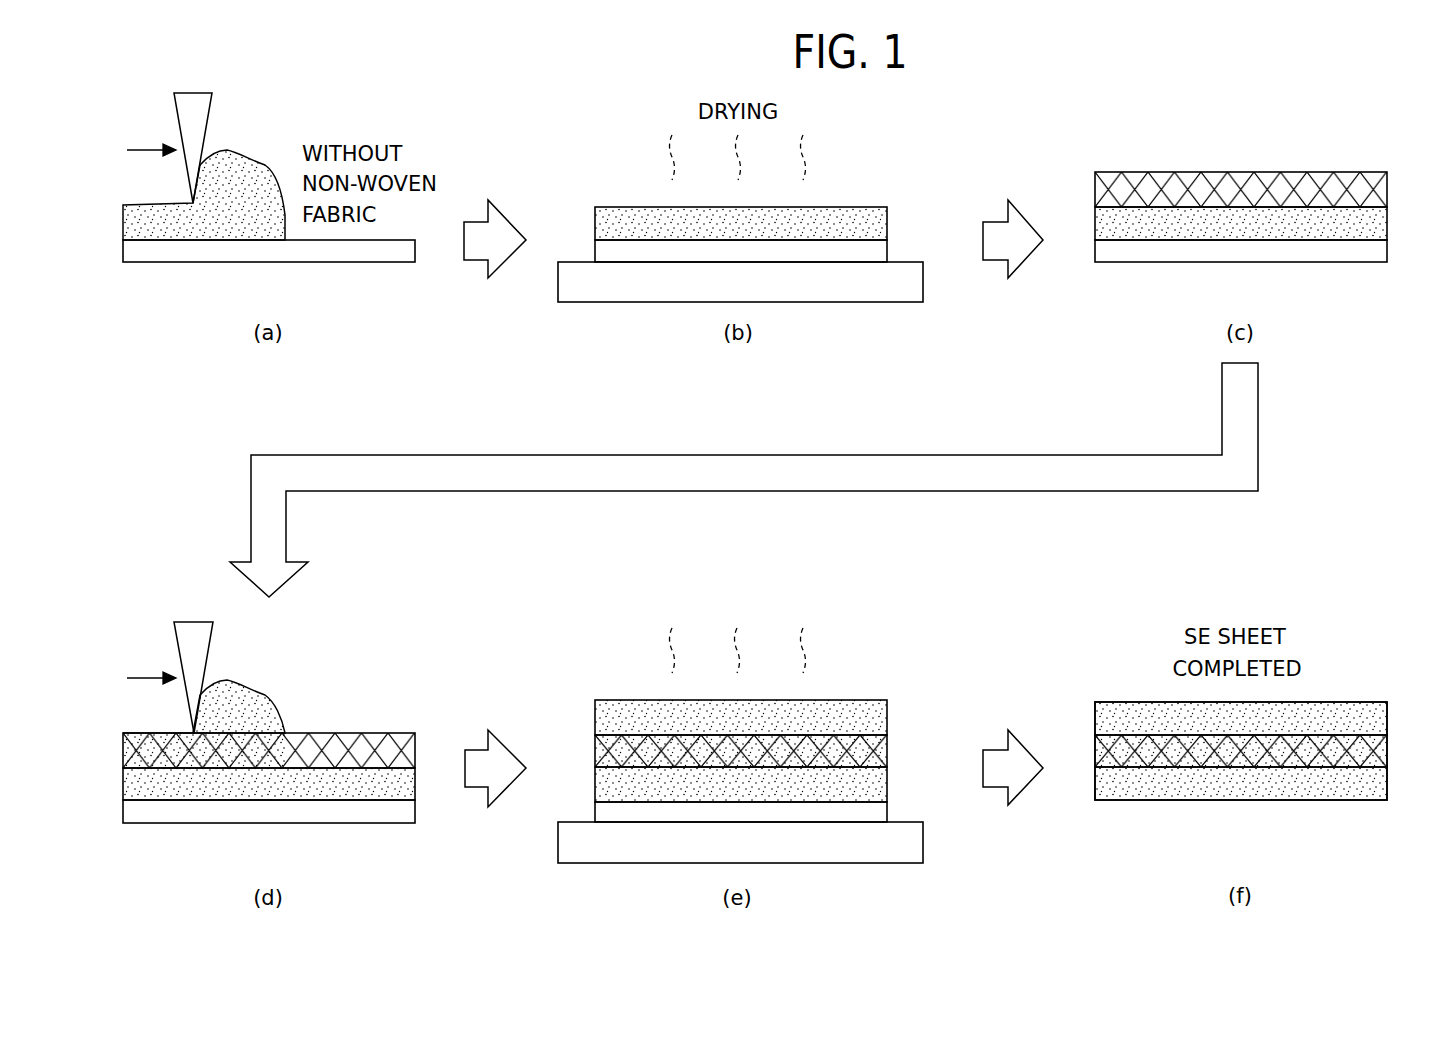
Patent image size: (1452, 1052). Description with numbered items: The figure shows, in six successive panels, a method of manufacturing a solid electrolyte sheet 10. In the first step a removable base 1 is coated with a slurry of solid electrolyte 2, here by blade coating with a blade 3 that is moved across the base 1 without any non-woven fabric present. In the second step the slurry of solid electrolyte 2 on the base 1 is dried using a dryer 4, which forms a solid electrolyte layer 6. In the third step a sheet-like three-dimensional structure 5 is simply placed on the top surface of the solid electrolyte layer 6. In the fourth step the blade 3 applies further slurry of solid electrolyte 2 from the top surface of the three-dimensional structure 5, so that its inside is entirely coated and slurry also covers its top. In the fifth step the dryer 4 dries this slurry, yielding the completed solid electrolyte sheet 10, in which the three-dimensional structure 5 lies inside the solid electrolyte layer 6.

The base 1 is at (368, 262).
The slurry of solid electrolyte 2 is at (255, 163).
The blade 3 is at (197, 92).
The dryer 4 is at (857, 302).
The three-dimensional structure 5 is at (1348, 172).
The solid electrolyte layer 6 is at (1387, 218).
The solid electrolyte sheet 10 is at (1378, 649).